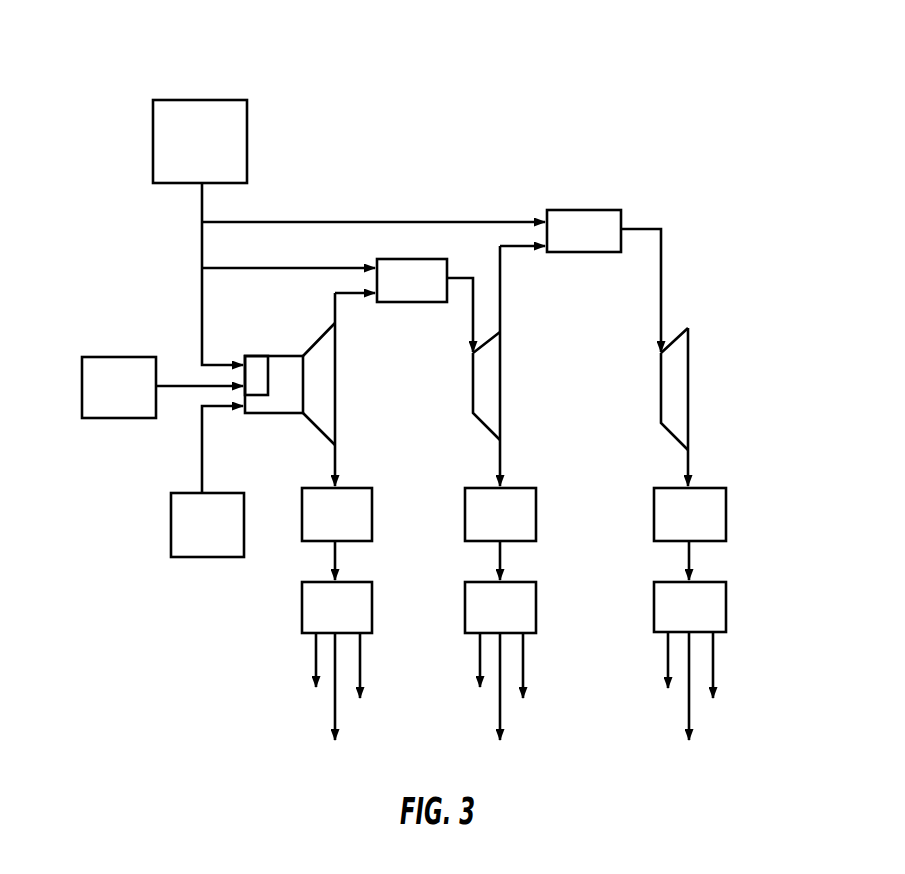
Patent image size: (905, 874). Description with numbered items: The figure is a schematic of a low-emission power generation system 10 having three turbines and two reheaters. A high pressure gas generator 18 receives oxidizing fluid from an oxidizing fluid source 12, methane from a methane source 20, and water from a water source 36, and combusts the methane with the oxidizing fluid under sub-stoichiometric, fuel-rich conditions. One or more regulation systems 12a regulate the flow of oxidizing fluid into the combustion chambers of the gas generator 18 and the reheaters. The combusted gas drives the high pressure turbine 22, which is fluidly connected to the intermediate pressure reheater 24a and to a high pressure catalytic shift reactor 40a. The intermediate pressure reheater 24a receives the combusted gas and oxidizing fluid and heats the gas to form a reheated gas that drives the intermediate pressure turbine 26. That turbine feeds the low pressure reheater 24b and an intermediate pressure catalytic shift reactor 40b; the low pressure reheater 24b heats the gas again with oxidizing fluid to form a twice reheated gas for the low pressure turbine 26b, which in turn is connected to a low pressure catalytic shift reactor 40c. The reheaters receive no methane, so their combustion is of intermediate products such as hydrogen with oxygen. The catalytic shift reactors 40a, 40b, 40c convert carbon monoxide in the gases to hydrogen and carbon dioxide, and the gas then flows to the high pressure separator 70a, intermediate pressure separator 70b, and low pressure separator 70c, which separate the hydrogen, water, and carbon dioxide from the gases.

The power generation system 10 is at (686, 126).
The oxidizing fluid source 12 is at (213, 100).
The regulation system 12a is at (257, 368).
The high pressure gas generator 18 is at (277, 418).
The methane source 20 is at (82, 378).
The water source 36 is at (171, 525).
The high pressure turbine 22 is at (317, 428).
The intermediate pressure reheater 24a is at (407, 259).
The low pressure reheater 24b is at (571, 210).
The intermediate pressure turbine 26 is at (500, 355).
The low pressure turbine 26b is at (688, 383).
The high pressure catalytic shift reactor 40a is at (372, 510).
The intermediate pressure catalytic shift reactor 40b is at (537, 508).
The low pressure catalytic shift reactor 40c is at (726, 517).
The high pressure separator 70a is at (372, 600).
The intermediate pressure separator 70b is at (537, 600).
The low pressure separator 70c is at (726, 600).